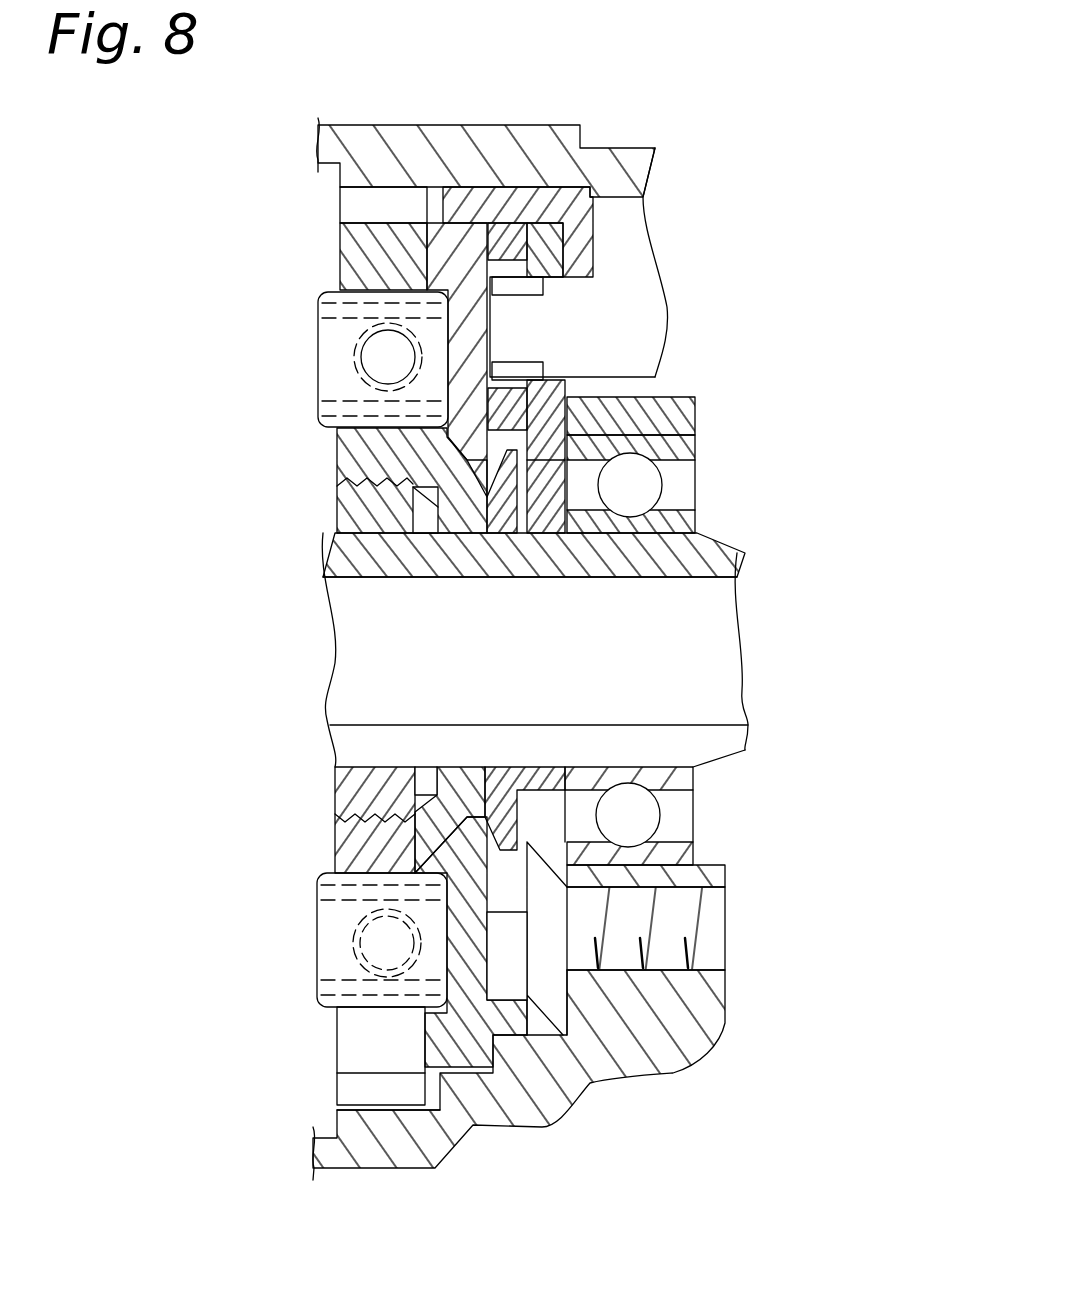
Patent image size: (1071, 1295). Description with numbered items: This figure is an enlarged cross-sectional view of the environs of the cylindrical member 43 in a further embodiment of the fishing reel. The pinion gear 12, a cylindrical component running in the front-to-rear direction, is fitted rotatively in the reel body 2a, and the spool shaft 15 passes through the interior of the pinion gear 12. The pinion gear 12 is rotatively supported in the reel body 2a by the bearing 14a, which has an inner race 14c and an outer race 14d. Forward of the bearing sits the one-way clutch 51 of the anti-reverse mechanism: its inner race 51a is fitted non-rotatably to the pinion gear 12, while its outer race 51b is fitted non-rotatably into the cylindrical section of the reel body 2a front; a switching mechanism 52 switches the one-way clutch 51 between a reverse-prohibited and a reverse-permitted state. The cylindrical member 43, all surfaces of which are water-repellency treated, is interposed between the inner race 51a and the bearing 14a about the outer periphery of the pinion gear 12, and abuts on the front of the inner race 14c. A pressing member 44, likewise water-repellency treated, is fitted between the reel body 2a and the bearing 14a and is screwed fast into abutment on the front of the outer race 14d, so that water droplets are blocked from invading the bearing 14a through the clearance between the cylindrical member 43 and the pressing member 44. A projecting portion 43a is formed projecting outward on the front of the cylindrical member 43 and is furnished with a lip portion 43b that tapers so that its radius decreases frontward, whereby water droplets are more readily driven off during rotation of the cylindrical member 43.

The reel body 2a is at (669, 1091).
The pinion gear 12 is at (710, 553).
The bearing 14a is at (716, 818).
The inner race 14c is at (697, 778).
The outer race 14d is at (697, 853).
The spool shaft 15 is at (708, 633).
The cylindrical member 43 is at (590, 478).
The projecting portion 43a is at (578, 410).
The lip portion 43b is at (545, 372).
The pressing member 44 is at (540, 388).
The one-way clutch 51 is at (340, 363).
The inner race 51a is at (335, 468).
The outer race 51b is at (337, 263).
The switching mechanism 52 is at (630, 242).